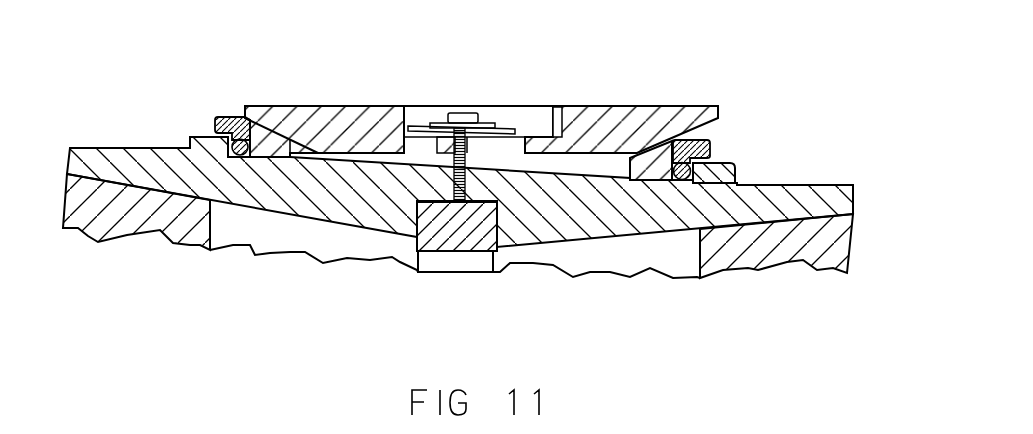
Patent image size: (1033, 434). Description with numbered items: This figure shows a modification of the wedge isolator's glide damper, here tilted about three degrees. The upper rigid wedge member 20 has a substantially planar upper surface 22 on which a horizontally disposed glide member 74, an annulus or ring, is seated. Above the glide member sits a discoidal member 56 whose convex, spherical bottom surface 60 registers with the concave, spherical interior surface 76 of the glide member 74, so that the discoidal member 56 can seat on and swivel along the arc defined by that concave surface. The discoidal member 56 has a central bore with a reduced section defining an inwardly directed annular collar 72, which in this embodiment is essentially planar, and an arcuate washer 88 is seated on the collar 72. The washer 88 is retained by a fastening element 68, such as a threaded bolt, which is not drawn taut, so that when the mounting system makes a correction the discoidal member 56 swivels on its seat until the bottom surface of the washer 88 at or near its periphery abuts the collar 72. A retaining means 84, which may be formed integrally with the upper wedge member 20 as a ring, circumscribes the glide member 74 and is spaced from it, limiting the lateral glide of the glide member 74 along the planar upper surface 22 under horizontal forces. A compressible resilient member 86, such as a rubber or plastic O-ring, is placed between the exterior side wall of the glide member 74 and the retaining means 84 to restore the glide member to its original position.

The upper rigid wedge member 20 is at (847, 192).
The planar upper surface 22 is at (603, 177).
The discoidal member 56 is at (662, 137).
The convex spherical bottom surface 60 is at (305, 153).
The fastening element 68 is at (465, 110).
The annular collar 72 is at (552, 106).
The glide member 74 is at (245, 118).
The interior surface 76 is at (623, 143).
The retaining means 84 is at (730, 163).
The compressible resilient member 86 is at (225, 138).
The arcuate washer 88 is at (420, 125).